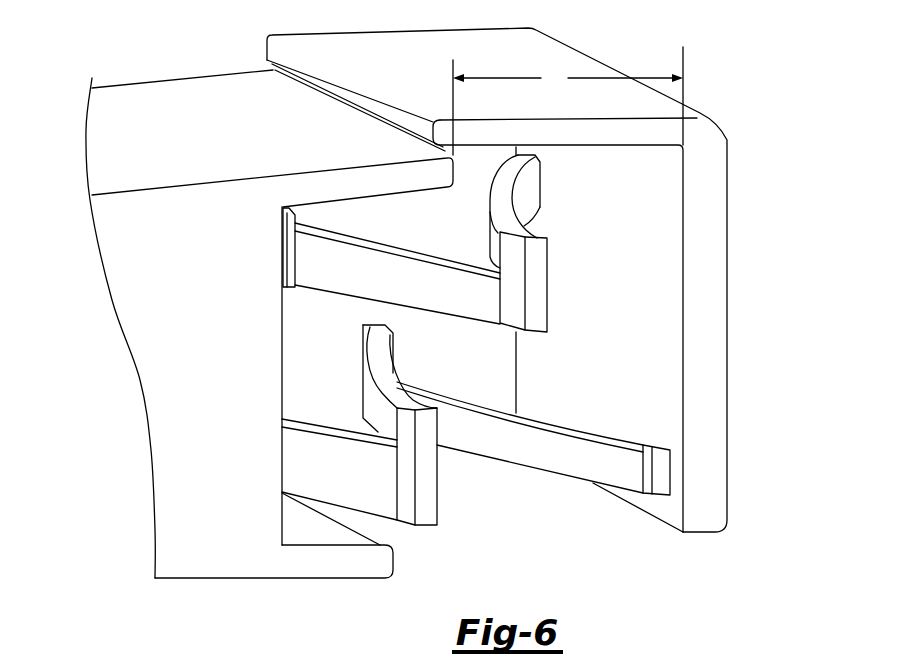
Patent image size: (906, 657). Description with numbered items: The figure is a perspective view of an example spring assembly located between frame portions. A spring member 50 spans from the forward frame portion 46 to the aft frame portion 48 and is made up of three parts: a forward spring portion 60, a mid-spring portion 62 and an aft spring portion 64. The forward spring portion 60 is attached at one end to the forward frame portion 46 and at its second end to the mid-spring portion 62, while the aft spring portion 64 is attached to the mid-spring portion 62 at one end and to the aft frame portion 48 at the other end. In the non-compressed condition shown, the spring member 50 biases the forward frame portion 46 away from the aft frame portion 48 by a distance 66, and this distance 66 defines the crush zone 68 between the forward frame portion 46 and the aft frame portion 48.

The forward frame portion 46 is at (195, 437).
The aft frame portion 48 is at (703, 347).
The spring member 50 is at (607, 543).
The forward spring portion 60 is at (338, 472).
The mid-spring portion 62 is at (417, 285).
The aft spring portion 64 is at (500, 210).
The distance 66 is at (568, 101).
The crush zone 68 is at (627, 295).